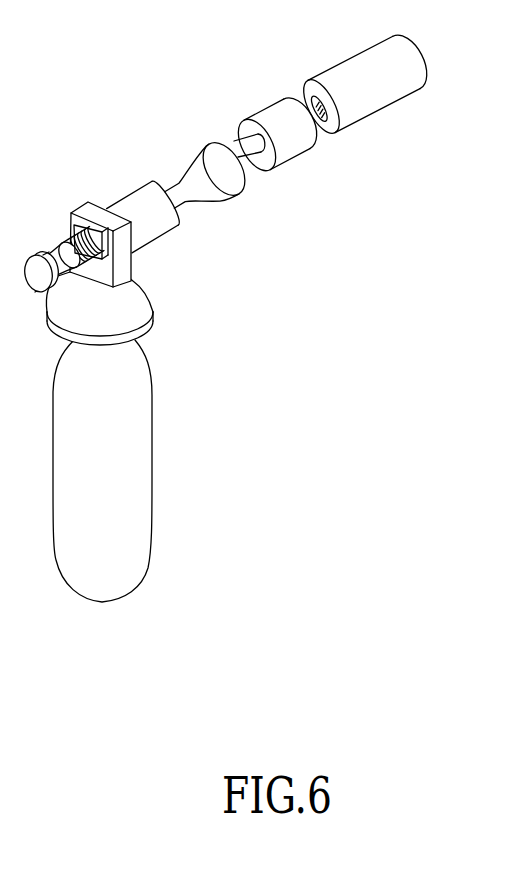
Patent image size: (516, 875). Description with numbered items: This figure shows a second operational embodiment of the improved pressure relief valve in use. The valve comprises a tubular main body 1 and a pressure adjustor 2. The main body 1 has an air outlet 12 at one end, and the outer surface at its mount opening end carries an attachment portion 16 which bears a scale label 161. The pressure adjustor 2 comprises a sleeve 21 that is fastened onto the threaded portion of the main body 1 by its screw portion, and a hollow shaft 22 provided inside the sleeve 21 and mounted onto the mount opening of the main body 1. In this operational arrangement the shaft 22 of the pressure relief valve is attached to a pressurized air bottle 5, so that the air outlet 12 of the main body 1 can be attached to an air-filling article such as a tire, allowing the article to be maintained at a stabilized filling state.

The main body 1 is at (368, 127).
The air outlet 12 is at (425, 58).
The attachment portion 16 is at (307, 127).
The scale label 161 is at (305, 141).
The pressure adjustor 2 is at (259, 99).
The sleeve 21 is at (290, 162).
The hollow shaft 22 is at (236, 140).
The pressurized air bottle 5 is at (152, 410).